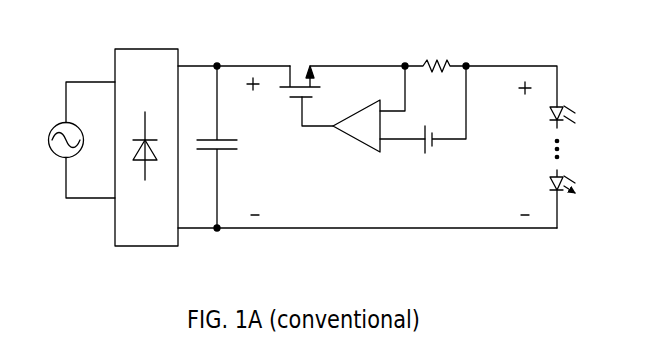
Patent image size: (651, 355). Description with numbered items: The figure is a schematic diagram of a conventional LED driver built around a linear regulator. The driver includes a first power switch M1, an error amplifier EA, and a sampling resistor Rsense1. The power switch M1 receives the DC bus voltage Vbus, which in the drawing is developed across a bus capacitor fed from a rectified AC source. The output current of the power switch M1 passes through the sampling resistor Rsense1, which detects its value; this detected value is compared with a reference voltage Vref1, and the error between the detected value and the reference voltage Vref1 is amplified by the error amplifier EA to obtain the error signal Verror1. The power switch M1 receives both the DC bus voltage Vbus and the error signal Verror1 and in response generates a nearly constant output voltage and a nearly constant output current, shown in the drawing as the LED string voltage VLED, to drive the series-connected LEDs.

The first power switch M1 is at (282, 66).
The error amplifier EA is at (367, 107).
The sampling resistor Rsense1 is at (423, 64).
The reference voltage Vref1 is at (425, 153).
The DC bus voltage Vbus is at (241, 147).
The error signal Verror1 is at (303, 127).
The LED string voltage VLED is at (520, 147).